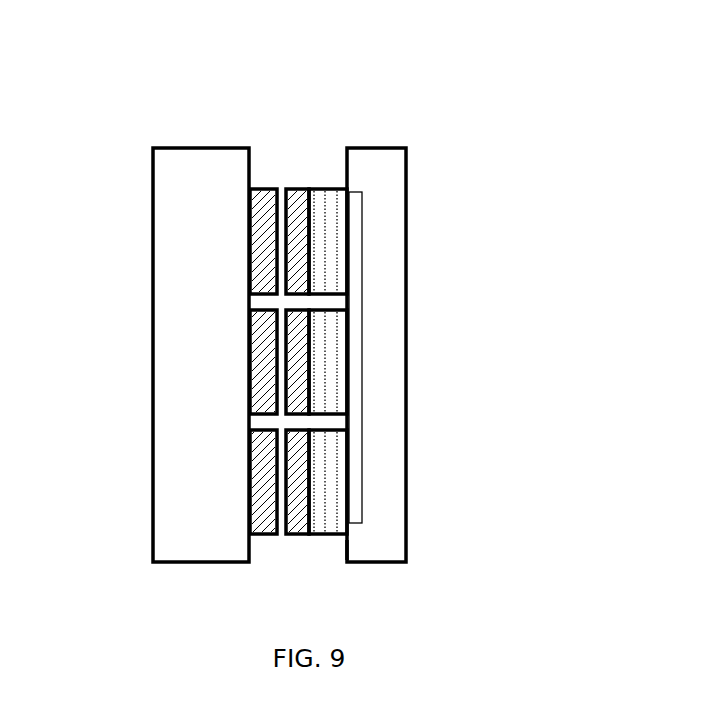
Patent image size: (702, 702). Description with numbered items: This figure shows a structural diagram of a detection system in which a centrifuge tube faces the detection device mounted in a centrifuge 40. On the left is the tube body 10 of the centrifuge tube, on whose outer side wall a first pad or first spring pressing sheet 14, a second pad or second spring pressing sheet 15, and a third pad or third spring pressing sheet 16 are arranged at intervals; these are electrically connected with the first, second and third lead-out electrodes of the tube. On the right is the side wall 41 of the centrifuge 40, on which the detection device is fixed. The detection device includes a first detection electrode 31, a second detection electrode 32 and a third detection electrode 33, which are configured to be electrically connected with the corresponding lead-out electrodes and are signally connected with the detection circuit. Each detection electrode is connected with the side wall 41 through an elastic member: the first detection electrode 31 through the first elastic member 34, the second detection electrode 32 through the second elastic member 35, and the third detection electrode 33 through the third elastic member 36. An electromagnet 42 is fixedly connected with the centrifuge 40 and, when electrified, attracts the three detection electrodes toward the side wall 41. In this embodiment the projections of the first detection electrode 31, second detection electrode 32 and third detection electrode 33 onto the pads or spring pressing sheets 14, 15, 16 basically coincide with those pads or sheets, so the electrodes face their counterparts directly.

The tube body 10 is at (168, 200).
The first pad or first spring pressing sheet 14 is at (265, 212).
The second pad or second spring pressing sheet 15 is at (265, 353).
The third pad or third spring pressing sheet 16 is at (265, 463).
The first detection electrode 31 is at (307, 190).
The second detection electrode 32 is at (347, 292).
The third detection electrode 33 is at (347, 420).
The first elastic member 34 is at (332, 252).
The second elastic member 35 is at (337, 400).
The third elastic member 36 is at (337, 523).
The centrifuge 40 is at (388, 178).
The side wall 41 is at (346, 550).
The electromagnet 42 is at (362, 262).